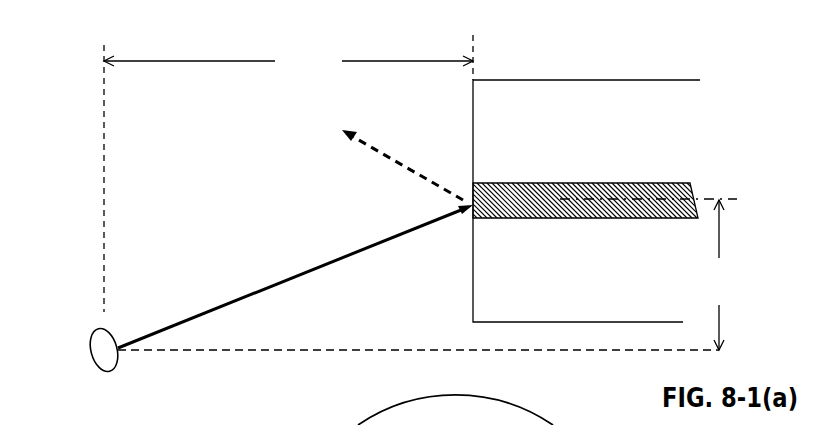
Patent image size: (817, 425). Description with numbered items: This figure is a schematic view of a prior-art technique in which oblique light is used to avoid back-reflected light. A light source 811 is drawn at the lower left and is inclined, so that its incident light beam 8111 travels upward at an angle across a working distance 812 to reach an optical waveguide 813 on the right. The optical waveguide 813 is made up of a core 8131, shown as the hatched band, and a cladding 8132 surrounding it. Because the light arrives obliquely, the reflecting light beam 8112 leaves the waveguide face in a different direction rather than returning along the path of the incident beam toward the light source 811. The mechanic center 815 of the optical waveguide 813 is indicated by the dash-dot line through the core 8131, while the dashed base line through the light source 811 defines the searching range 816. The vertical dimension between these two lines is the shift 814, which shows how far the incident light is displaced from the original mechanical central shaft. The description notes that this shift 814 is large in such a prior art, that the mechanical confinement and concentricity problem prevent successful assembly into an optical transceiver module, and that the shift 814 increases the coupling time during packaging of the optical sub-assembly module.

The light source 811 is at (81, 349).
The incident light beam 8111 is at (295, 276).
The reflecting light beam 8112 is at (402, 159).
The working distance 812 is at (288, 173).
The optical waveguide 813 is at (586, 175).
The core 8131 is at (528, 194).
The cladding 8132 is at (523, 127).
The shift 814 is at (720, 275).
The mechanic center 815 is at (670, 188).
The searching range 816 is at (418, 372).